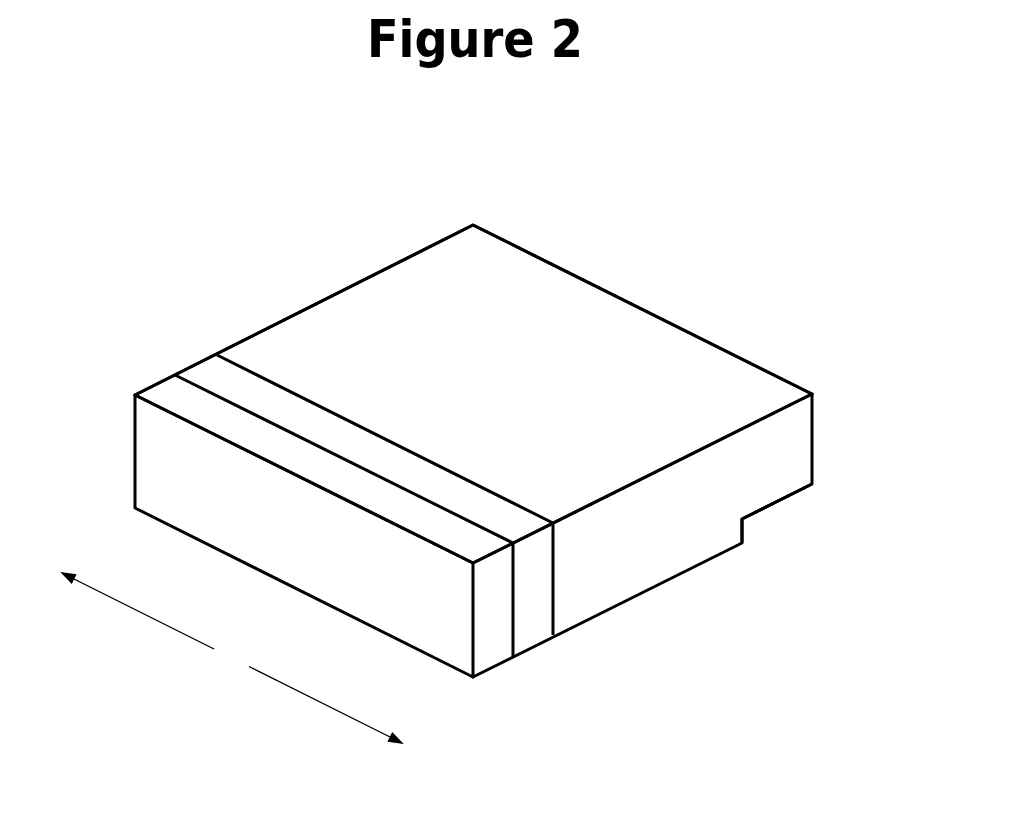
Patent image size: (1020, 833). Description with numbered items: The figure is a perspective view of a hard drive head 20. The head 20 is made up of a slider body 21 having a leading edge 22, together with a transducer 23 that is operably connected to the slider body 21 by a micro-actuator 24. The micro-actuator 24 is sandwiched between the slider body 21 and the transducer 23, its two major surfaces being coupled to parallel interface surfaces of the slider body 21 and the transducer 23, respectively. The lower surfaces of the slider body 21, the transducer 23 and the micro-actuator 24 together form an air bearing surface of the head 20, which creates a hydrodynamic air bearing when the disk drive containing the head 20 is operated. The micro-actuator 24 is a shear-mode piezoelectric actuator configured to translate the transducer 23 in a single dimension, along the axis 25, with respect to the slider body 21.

The head 20 is at (514, 461).
The slider body 21 is at (495, 394).
The leading edge 22 is at (765, 528).
The transducer 23 is at (396, 542).
The micro-actuator 24 is at (542, 607).
The axis 25 is at (232, 658).